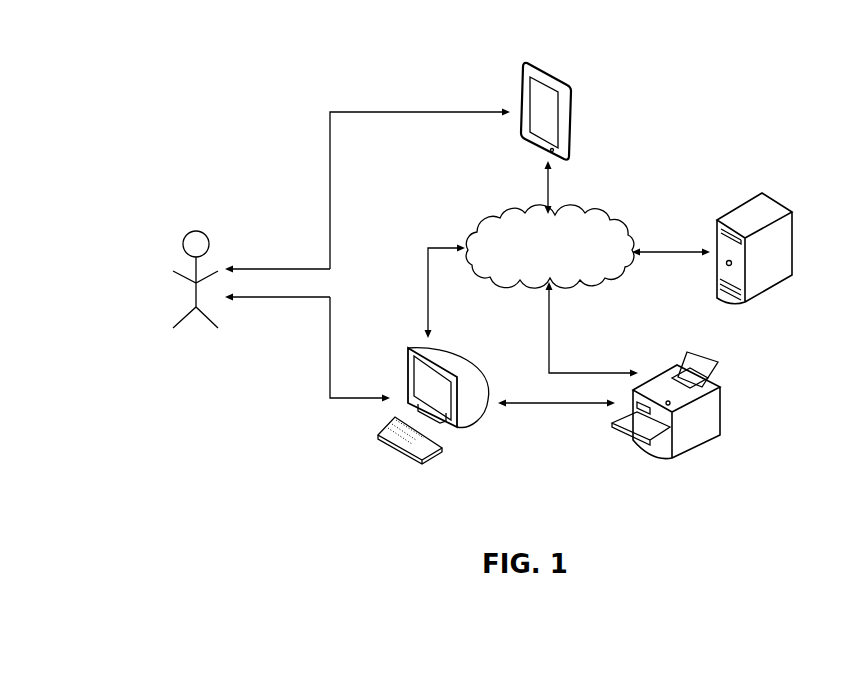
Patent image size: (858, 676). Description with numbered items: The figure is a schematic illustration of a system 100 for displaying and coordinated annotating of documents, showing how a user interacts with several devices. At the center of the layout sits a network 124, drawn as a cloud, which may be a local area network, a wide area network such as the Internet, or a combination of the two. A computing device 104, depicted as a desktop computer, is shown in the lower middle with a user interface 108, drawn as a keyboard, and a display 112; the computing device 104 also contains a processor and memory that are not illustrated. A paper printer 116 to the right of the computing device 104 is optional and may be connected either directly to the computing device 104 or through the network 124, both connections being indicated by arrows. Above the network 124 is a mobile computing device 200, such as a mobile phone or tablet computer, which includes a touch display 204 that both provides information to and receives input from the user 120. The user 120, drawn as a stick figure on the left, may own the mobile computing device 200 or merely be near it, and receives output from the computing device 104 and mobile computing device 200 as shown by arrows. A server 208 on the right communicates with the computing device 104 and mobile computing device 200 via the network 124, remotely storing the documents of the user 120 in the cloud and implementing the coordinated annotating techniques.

The system 100 is at (160, 73).
The computing device 104 is at (473, 370).
The user interface 108 is at (387, 442).
The display 112 is at (445, 398).
The paper printer 116 is at (686, 452).
The user 120 is at (161, 267).
The network 124 is at (494, 220).
The mobile computing device 200 is at (548, 68).
The touch display 204 is at (543, 113).
The server 208 is at (778, 200).